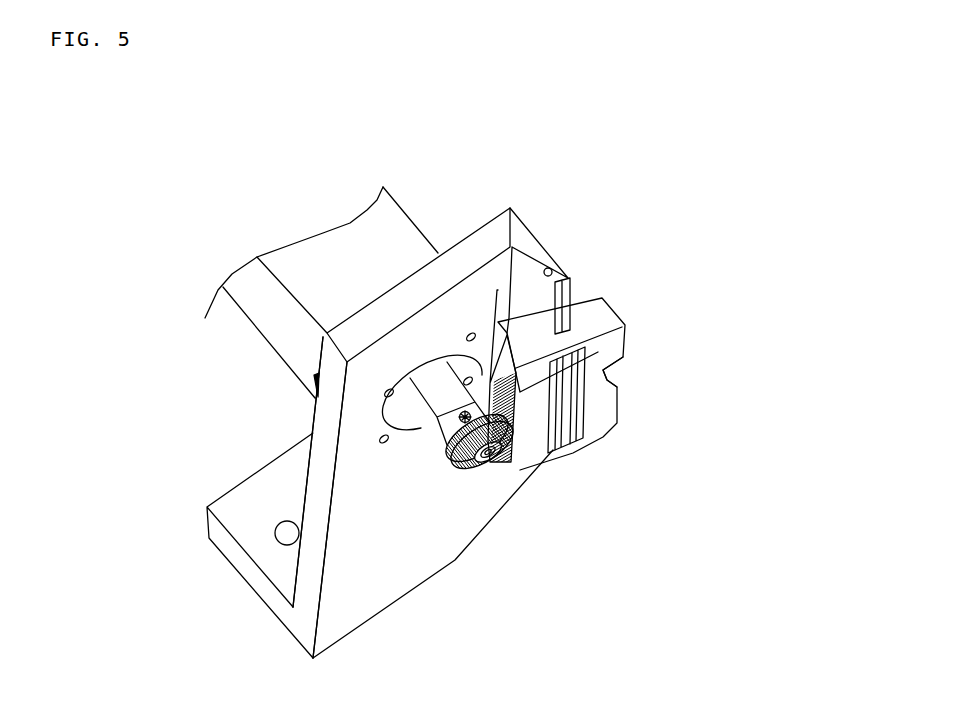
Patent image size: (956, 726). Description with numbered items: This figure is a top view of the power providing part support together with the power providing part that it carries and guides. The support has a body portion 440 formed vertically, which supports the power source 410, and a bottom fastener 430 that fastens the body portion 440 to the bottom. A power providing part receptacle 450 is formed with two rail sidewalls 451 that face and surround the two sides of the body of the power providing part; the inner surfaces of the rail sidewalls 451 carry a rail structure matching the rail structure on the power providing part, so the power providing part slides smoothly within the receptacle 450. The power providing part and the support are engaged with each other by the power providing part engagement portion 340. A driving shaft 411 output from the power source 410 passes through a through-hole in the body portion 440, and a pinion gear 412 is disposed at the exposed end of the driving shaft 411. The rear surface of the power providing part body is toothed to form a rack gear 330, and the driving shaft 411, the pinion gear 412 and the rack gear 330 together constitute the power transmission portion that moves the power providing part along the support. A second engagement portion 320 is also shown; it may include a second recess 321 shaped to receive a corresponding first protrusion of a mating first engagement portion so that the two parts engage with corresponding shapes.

The power source 410 is at (383, 217).
The driving shaft 411 is at (440, 406).
The pinion gear 412 is at (456, 468).
The bottom fastener 430 is at (220, 537).
The body portion 440 is at (353, 543).
The rail sidewall 451 is at (528, 300).
The second engagement portion 320 is at (623, 333).
The second recess 321 is at (607, 380).
The rack gear 330 is at (505, 493).
The power providing part engagement portion 340 is at (573, 307).
The power providing part receptacle 450 is at (621, 429).